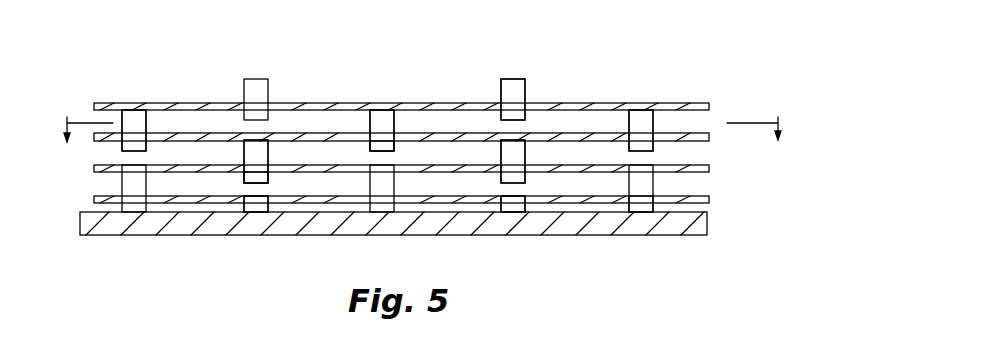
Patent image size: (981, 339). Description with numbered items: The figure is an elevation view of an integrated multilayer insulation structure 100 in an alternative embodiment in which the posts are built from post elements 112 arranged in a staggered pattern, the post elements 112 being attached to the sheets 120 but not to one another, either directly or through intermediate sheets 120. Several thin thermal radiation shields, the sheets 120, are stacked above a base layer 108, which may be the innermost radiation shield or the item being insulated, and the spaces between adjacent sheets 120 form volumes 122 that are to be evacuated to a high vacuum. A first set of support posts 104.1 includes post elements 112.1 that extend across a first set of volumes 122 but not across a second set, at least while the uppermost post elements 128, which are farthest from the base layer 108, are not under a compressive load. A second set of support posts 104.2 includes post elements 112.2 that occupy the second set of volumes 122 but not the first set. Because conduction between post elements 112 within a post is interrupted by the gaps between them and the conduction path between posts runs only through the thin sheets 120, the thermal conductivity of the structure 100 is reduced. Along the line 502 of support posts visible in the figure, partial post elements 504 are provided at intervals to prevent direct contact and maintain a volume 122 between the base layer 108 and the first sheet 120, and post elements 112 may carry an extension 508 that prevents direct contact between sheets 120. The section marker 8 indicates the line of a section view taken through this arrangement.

The integrated multilayer insulation structure 100 is at (732, 85).
The first set of support posts 104.1 is at (130, 96).
The second set of support posts 104.2 is at (255, 72).
The base layer 108 is at (708, 222).
The post element 112 is at (527, 97).
The post element of first set of support posts 112.1 is at (146, 118).
The post element of second set of support posts 112.2 is at (527, 155).
The sheet 120 is at (216, 133).
The volume 122 is at (703, 123).
The top post element 128 is at (500, 102).
The line of support posts 502 is at (79, 107).
The partial post element 504 is at (250, 212).
The extension 508 is at (370, 150).
The section line 8 is at (423, 129).